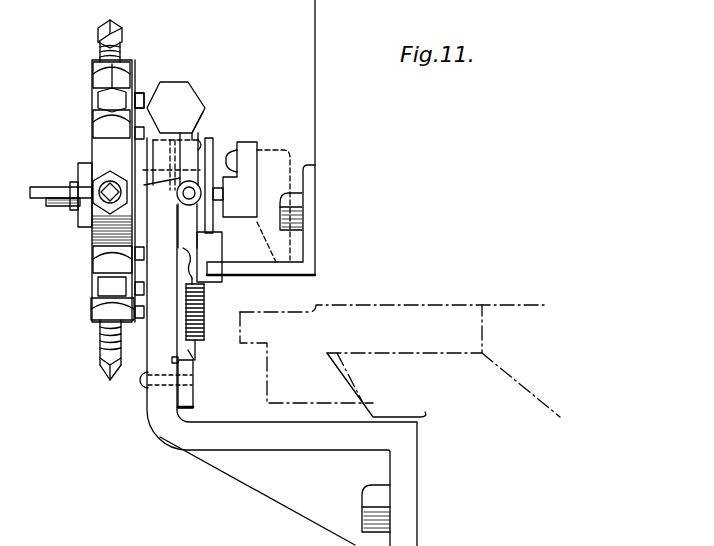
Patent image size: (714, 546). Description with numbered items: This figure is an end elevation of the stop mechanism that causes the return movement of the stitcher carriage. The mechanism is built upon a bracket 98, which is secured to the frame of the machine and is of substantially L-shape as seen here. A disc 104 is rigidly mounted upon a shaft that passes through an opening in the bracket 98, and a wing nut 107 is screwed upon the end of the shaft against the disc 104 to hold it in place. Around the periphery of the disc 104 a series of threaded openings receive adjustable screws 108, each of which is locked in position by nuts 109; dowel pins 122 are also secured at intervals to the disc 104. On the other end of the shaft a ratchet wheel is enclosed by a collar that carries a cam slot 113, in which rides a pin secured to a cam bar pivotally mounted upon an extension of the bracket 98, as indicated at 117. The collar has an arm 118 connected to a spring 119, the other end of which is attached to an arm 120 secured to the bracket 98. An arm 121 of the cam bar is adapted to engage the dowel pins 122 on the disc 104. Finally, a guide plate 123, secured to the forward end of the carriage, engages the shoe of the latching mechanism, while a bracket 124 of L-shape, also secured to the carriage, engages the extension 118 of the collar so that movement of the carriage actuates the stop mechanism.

The bracket 98 is at (170, 425).
The disc 104 is at (102, 232).
The wing nut 107 is at (34, 188).
The adjustable screws 108 is at (100, 33).
The nuts 109 is at (98, 72).
The cam slot 113 is at (203, 146).
The pivot of cam bar 117 is at (186, 106).
The arm of collar 118 is at (216, 253).
The spring 119 is at (205, 318).
The arm 120 is at (190, 394).
The arm of cam bar 121 is at (143, 212).
The dowel pins 122 is at (140, 93).
The guide plate 123 is at (245, 145).
The bracket of L-shape 124 is at (307, 262).